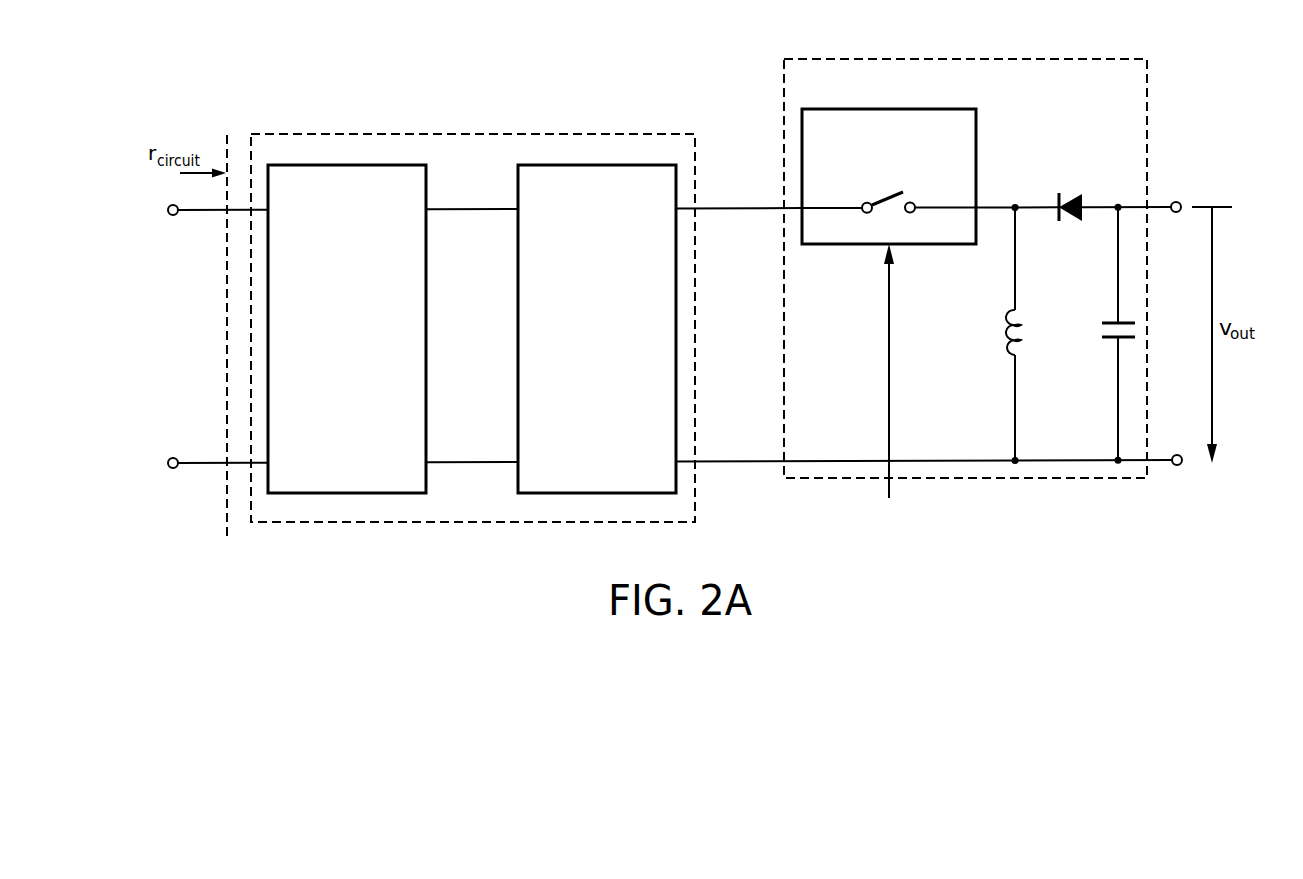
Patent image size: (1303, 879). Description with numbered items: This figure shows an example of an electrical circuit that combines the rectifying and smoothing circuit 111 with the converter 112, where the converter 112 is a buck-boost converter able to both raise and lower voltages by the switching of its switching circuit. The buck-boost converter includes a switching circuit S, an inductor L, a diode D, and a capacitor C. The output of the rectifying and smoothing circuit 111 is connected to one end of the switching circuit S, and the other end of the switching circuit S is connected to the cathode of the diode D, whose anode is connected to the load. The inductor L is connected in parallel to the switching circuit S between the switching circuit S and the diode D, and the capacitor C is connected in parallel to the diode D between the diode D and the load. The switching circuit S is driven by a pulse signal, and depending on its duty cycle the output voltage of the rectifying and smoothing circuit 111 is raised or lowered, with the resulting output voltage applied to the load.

The rectifying and smoothing circuit 111 is at (640, 133).
The converter 112 is at (978, 293).
The switching circuit S is at (925, 109).
The diode D is at (1073, 193).
The inductor L is at (1002, 317).
The capacitor C is at (1108, 318).